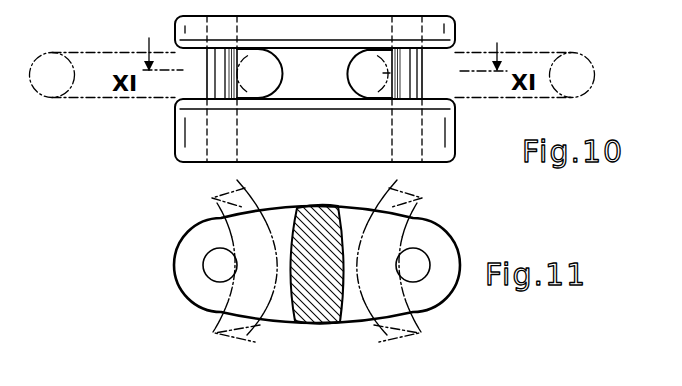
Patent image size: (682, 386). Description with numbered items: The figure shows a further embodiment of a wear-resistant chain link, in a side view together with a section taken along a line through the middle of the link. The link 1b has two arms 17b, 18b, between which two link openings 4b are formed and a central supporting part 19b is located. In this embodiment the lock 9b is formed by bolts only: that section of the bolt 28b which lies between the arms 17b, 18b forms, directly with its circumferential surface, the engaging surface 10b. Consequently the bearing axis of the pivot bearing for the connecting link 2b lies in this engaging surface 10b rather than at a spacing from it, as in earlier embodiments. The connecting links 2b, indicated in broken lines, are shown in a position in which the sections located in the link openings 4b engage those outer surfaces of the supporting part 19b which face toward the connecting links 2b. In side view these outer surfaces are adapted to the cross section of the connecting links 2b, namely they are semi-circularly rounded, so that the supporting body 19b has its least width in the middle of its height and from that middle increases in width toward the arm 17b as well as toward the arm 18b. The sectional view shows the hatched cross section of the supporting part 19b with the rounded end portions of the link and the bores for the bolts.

In FIG. 10, the chain link 1b is at (332, 95).
In FIG. 10, the connecting link 2b is at (536, 57).
In FIG. 10, the link opening 4b is at (366, 98).
In FIG. 10, the lock 9b is at (406, 89).
In FIG. 10, the engaging surface 10b is at (386, 73).
In FIG. 10, the arm 17b is at (447, 125).
In FIG. 10, the arm 18b is at (448, 25).
In FIG. 10, the supporting part 19b is at (305, 75).
In FIG. 11, the supporting part 19b is at (332, 225).
In FIG. 10, the bolt 28b is at (404, 90).